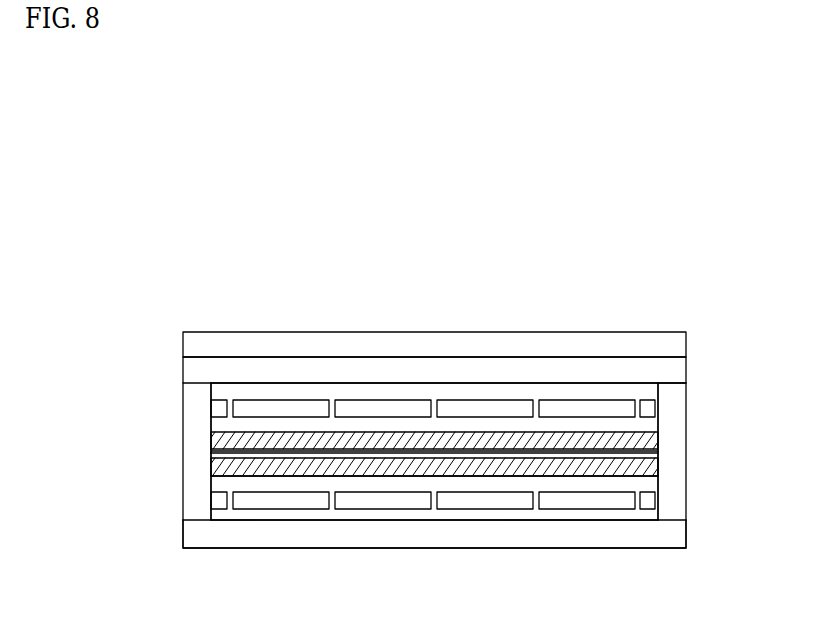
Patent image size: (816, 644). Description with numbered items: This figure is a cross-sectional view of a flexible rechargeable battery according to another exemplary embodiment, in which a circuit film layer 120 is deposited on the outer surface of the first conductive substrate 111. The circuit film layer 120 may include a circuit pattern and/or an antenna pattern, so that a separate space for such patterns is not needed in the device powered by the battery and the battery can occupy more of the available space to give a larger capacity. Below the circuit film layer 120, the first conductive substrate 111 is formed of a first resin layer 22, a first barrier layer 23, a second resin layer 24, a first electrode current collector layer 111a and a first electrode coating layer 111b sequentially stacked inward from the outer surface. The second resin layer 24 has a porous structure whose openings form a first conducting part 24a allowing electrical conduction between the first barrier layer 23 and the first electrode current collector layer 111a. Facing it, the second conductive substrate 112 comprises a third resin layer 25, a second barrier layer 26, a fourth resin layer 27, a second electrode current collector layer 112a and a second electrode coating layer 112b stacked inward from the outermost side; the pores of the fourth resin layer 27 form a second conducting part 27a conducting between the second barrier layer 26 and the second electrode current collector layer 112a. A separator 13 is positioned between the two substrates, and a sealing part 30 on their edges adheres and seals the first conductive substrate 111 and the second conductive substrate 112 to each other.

The circuit film layer 120 is at (683, 341).
The first resin layer 22 is at (195, 371).
The first barrier layer 23 is at (218, 392).
The second resin layer 24 is at (409, 398).
The first conducting part 24a is at (642, 402).
The first conductive substrate 111 is at (66, 318).
The first electrode current collector layer 111a is at (212, 430).
The first electrode coating layer 111b is at (212, 451).
The separator 13 is at (646, 453).
The sealing part 30 is at (677, 433).
The second conductive substrate 112 is at (56, 477).
The second electrode coating layer 112b is at (212, 476).
The second electrode current collector layer 112a is at (217, 482).
The fourth resin layer 27 is at (405, 525).
The second conducting part 27a is at (640, 498).
The second barrier layer 26 is at (217, 518).
The third resin layer 25 is at (183, 548).